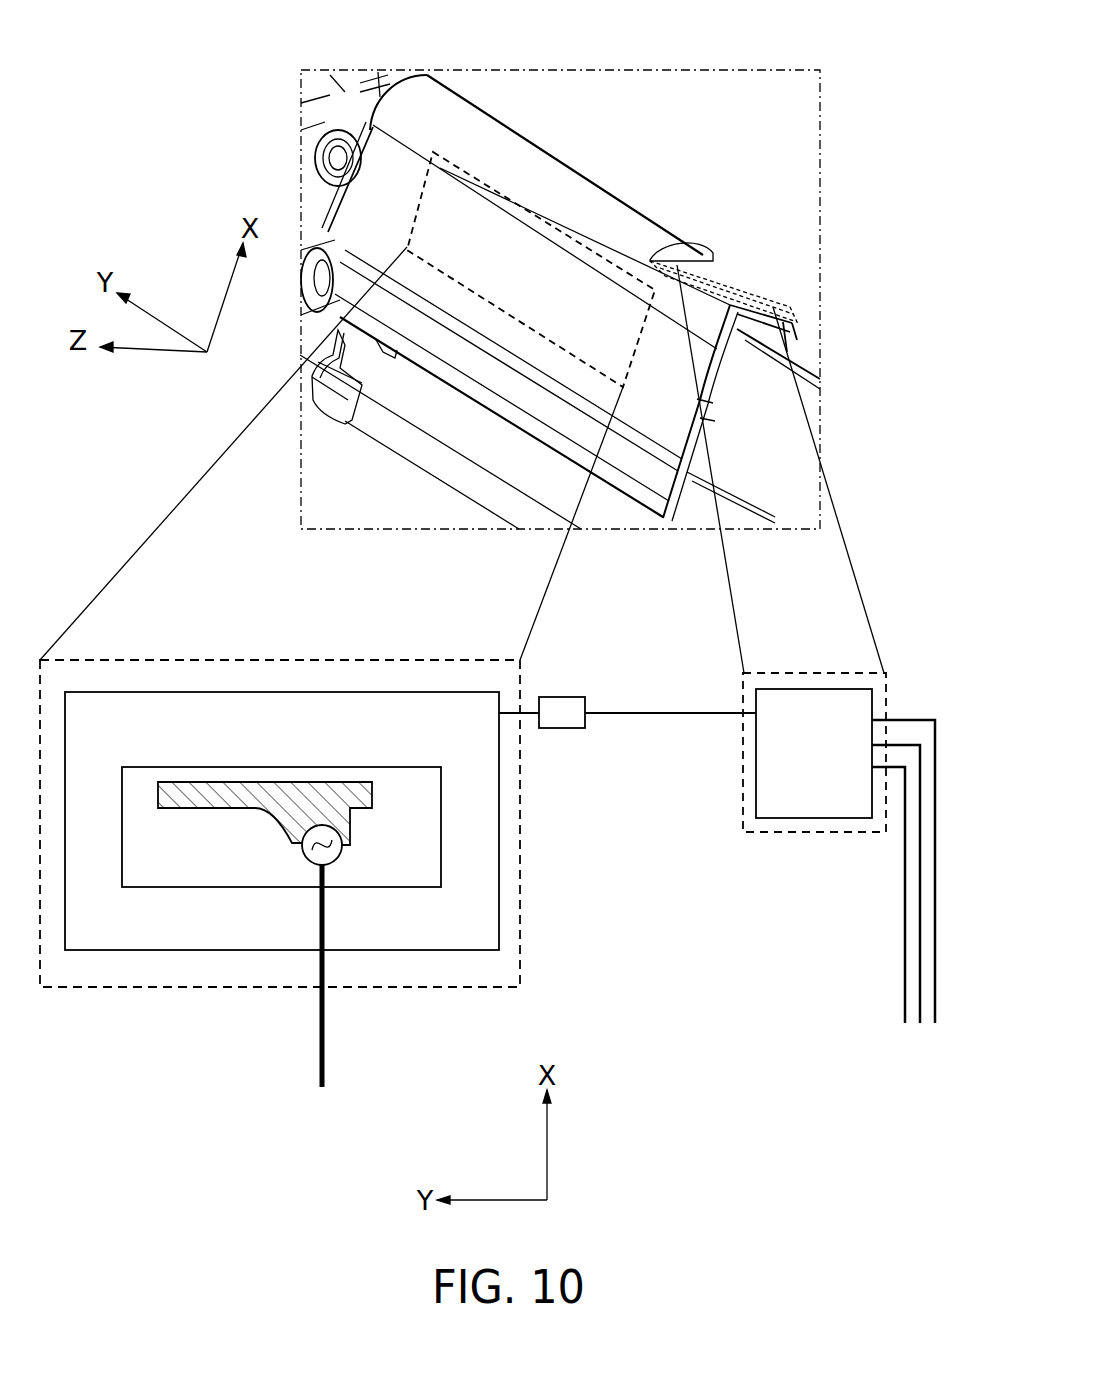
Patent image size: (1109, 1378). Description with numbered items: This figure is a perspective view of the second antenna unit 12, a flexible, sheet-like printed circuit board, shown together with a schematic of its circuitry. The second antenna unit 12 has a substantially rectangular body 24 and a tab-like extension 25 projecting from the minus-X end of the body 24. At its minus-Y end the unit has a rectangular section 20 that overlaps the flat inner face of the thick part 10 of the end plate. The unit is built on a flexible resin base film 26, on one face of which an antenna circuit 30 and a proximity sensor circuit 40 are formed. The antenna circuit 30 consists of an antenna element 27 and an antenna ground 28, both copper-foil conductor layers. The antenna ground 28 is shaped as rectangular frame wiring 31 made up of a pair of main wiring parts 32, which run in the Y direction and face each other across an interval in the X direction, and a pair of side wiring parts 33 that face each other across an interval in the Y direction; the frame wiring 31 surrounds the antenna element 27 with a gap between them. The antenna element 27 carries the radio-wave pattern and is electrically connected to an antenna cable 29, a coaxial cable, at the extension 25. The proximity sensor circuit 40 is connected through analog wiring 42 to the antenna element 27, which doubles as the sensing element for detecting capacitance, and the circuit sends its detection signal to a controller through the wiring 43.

The thick part 10 is at (723, 263).
The second antenna unit 12 is at (583, 165).
The rectangular section 20 is at (730, 290).
The body 24 is at (630, 218).
The extension 25 is at (400, 362).
The base film 26 is at (380, 173).
The antenna element 27 is at (247, 798).
The antenna ground 28 is at (405, 195).
The antenna cable 29 is at (325, 1035).
The antenna circuit 30 is at (507, 191).
The frame wiring 31 is at (222, 689).
The main wiring parts 32 is at (375, 715).
The side wiring parts 33 is at (480, 830).
The proximity sensor circuit 40 is at (755, 290).
The analog wiring 42 is at (660, 716).
The wiring 43 is at (935, 960).